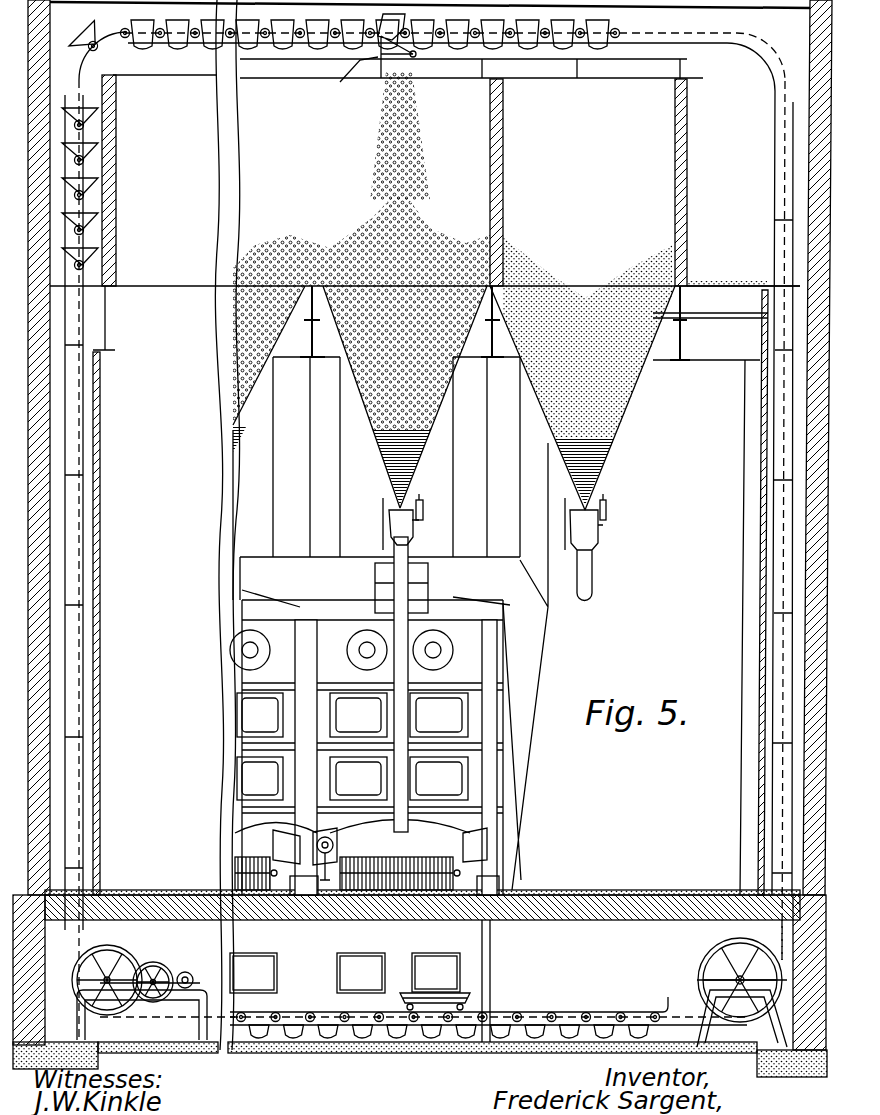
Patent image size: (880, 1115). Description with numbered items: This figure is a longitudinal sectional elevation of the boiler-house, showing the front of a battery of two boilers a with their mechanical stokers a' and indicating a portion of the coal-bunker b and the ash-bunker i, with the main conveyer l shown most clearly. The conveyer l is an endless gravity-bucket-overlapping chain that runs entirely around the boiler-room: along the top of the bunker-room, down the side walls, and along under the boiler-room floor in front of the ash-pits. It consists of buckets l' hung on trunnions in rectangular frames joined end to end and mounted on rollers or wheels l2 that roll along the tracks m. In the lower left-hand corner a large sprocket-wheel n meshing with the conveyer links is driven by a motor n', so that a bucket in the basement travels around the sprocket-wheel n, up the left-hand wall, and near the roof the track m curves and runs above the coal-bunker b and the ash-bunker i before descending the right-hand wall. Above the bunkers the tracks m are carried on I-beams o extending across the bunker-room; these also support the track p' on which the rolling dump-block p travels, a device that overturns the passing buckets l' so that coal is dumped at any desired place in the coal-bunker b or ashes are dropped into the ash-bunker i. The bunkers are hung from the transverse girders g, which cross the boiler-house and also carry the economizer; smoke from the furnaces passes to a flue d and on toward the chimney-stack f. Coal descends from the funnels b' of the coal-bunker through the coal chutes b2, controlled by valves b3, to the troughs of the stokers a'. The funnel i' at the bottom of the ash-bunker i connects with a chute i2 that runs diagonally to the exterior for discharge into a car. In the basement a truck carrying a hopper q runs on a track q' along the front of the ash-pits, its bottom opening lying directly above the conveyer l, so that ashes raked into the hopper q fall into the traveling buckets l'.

The conveyer l is at (148, 531).
The rollers or wheels l2 is at (620, 37).
The buckets l' is at (487, 1010).
The tracks m is at (746, 57).
The I-beams o is at (491, 70).
The rolling dump-block p is at (407, 57).
The track p' is at (350, 78).
The coal-bunker b is at (361, 251).
The funnels b' is at (360, 397).
The coal chutes or pipes b2 is at (394, 580).
The valves b3 is at (405, 531).
The ash-bunker i is at (587, 307).
The funnel i' is at (582, 398).
The chute or pipe i2 is at (588, 574).
The transverse beams or girders g is at (311, 330).
The chimney-stack f is at (651, 588).
The flue d is at (287, 547).
The boilers a is at (366, 734).
The mechanical stokers a' is at (347, 901).
The sprocket-wheel n is at (139, 985).
The motor n' is at (174, 975).
The hopper q is at (458, 991).
The track q' is at (534, 1010).